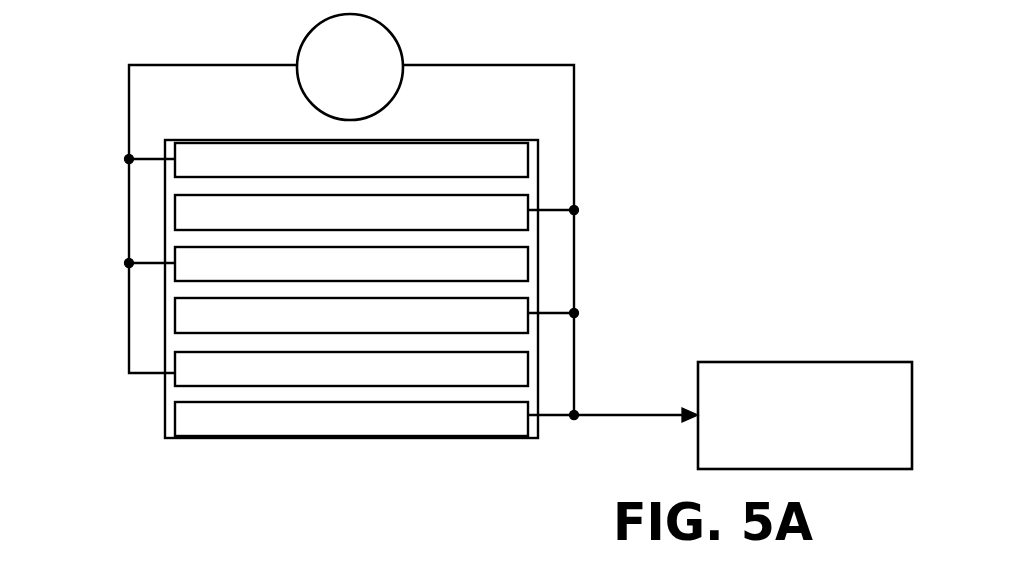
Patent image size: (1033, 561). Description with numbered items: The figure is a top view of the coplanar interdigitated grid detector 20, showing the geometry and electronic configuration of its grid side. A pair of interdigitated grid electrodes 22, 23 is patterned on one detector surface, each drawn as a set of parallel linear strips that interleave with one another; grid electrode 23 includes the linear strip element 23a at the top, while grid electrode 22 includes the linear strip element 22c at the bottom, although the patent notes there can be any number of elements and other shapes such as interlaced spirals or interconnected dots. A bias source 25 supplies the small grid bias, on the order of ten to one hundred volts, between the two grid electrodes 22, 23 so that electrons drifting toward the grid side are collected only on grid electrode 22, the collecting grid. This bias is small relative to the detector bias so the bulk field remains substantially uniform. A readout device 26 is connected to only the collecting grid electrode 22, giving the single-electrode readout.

The coplanar interdigitated grid detector 20 is at (656, 199).
The grid electrode 22 is at (595, 202).
The linear strip element 22c is at (519, 438).
The grid electrode 23 is at (118, 153).
The linear strip element 23a is at (240, 141).
The source 25 is at (401, 44).
The readout device 26 is at (768, 363).